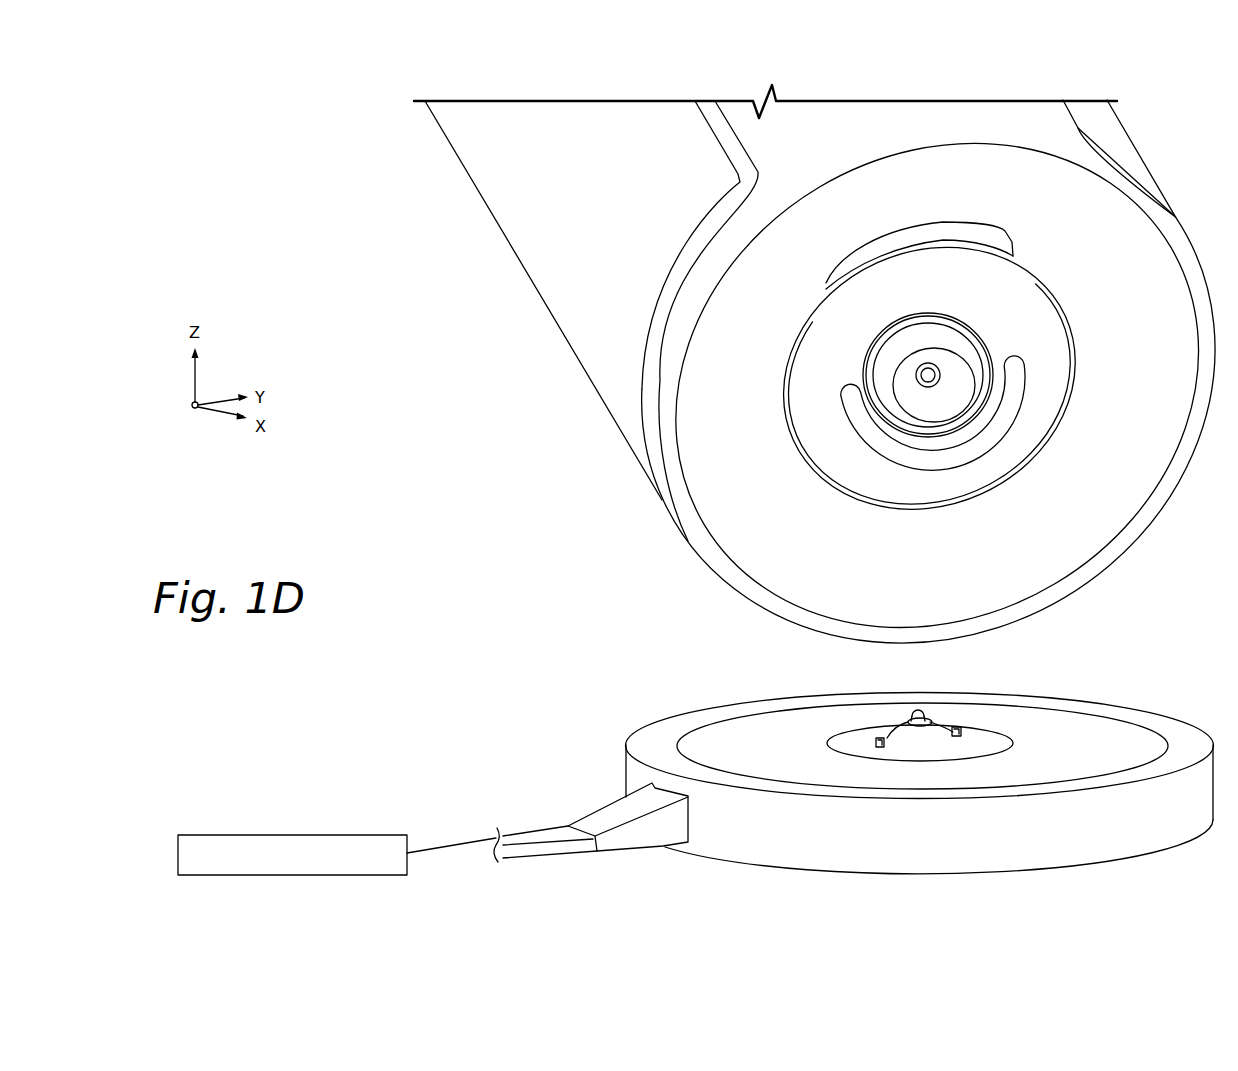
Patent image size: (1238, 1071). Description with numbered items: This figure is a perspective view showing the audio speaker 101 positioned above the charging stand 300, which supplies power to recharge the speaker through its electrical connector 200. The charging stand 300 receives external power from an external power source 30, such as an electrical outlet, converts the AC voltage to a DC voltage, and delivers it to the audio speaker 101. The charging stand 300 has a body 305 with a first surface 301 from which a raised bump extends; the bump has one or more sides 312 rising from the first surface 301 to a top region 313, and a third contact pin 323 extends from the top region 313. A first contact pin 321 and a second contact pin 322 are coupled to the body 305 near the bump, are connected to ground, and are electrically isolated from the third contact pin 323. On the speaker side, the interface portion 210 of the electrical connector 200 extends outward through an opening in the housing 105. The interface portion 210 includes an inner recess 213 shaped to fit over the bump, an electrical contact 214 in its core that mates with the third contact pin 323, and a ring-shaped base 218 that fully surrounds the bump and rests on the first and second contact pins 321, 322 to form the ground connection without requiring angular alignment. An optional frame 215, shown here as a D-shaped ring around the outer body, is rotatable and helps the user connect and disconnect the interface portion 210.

The audio speaker 101 is at (466, 335).
The housing 105 is at (1107, 515).
The electrical connector 200 is at (801, 357).
The interface portion 210 is at (1003, 326).
The inner recess 213 is at (893, 380).
The electrical contact 214 is at (925, 370).
The frame 215 is at (928, 460).
The base 218 is at (946, 346).
The charging stand 300 is at (605, 685).
The first surface 301 is at (1075, 733).
The body 305 is at (1160, 715).
The sides 312 is at (946, 726).
The top region 313 is at (903, 719).
The first contact pin 321 is at (877, 739).
The second contact pin 322 is at (961, 728).
The third contact pin 323 is at (921, 707).
The external power source 30 is at (247, 835).